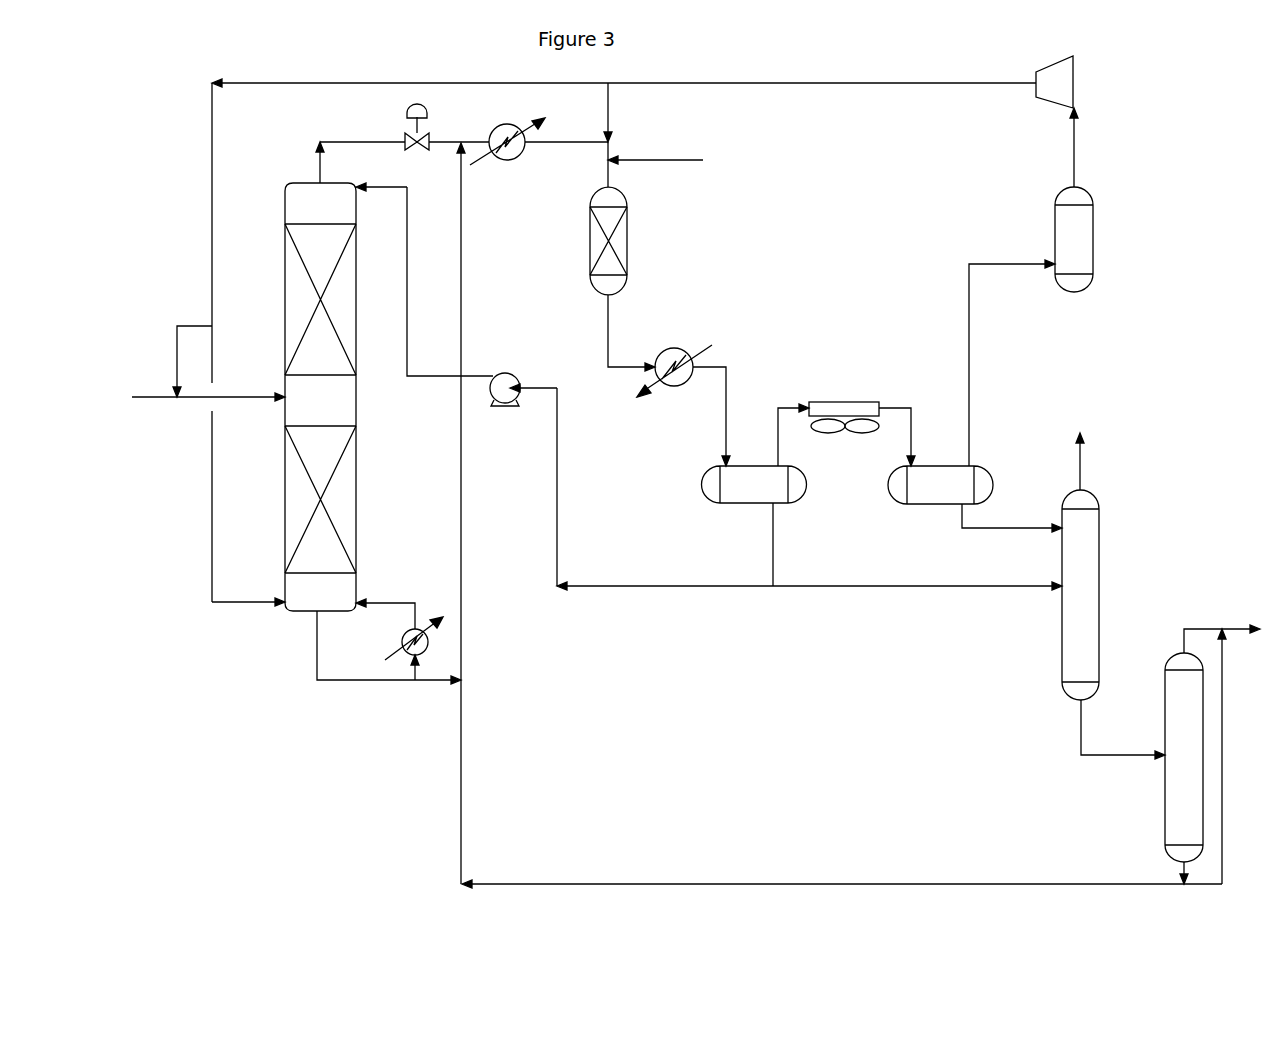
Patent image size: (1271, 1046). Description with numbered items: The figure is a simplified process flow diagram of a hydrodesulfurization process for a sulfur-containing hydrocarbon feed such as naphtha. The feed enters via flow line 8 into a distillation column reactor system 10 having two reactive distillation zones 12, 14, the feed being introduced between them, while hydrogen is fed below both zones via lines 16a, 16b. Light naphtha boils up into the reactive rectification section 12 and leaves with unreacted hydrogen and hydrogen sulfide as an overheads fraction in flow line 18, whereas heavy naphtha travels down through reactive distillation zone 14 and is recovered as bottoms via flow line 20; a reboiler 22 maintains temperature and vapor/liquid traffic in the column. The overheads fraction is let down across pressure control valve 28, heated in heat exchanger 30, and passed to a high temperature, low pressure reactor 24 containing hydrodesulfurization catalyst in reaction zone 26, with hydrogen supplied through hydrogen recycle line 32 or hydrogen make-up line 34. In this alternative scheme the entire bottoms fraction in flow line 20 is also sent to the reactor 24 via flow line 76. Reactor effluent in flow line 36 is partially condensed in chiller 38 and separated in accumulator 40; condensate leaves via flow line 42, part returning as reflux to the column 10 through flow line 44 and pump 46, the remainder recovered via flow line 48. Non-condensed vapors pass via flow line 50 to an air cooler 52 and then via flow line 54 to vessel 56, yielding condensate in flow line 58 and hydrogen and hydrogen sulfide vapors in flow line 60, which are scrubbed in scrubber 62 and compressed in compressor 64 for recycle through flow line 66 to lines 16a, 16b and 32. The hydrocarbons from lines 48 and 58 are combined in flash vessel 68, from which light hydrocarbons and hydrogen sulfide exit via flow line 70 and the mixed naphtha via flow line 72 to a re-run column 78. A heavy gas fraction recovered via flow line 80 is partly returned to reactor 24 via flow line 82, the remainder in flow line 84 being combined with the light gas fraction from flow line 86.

The flow line 8 is at (149, 400).
The distillation column reactor system 10 is at (285, 190).
The reactive distillation zone 12 is at (299, 297).
The reactive distillation zone 14 is at (340, 493).
The hydrogen feed line 16a is at (219, 602).
The hydrogen feed line 16b is at (160, 355).
The flow line 18 is at (319, 142).
The flow line 20 is at (434, 682).
The reboiler 22 is at (405, 632).
The HTLP reactor 24 is at (612, 293).
The reaction zone 26 is at (598, 243).
The pressure control valve 28 is at (406, 133).
The heat exchanger 30 is at (504, 162).
The hydrogen recycle line 32 is at (605, 124).
The hydrogen make-up line 34 is at (639, 158).
The flow line 36 is at (608, 364).
The chiller 38 is at (672, 392).
The accumulator 40 is at (754, 484).
The flow line 42 is at (770, 564).
The flow line 44 is at (630, 584).
The pump 46 is at (514, 410).
The flow line 48 is at (856, 583).
The flow line 50 is at (778, 406).
The air cooler 52 is at (844, 400).
The flow line 54 is at (899, 405).
The vessel 56 is at (940, 485).
The flow line 58 is at (1004, 528).
The flow line 60 is at (968, 313).
The scrubber 62 is at (1074, 239).
The compressor 64 is at (1057, 121).
The flow line 66 is at (816, 84).
The flash vessel 68 is at (1080, 595).
The flow line 70 is at (1080, 461).
The flow line 72 is at (1128, 753).
The flow line 76 is at (461, 623).
The re-run column 78 is at (1184, 757).
The flow line 80 is at (1174, 873).
The flow line 82 is at (856, 882).
The flow line 84 is at (1222, 819).
The flow line 86 is at (1201, 628).